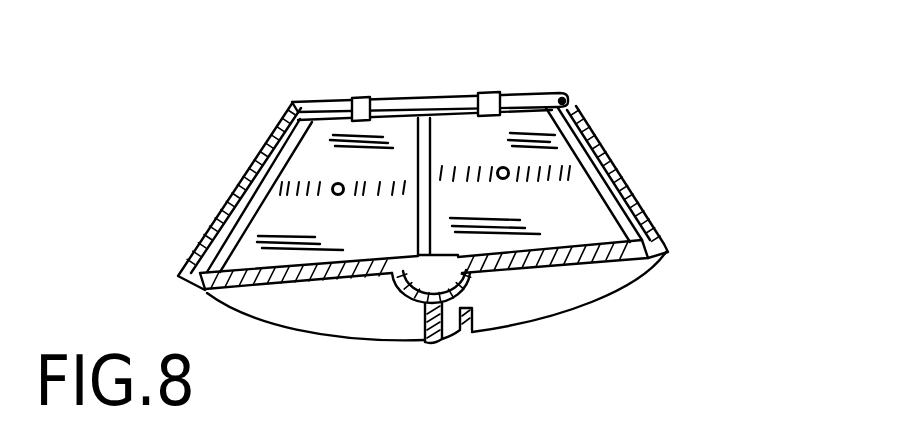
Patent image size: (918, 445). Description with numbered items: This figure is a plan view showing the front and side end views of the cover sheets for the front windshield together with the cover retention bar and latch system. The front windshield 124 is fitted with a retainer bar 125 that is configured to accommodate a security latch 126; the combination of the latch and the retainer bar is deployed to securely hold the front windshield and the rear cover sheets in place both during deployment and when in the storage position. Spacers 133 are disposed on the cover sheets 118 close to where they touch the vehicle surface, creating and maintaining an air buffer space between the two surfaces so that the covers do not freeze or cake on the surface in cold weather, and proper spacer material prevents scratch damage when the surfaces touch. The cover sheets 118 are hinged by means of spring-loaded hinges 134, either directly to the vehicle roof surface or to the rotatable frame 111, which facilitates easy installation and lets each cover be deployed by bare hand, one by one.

The rotatable frame 111 is at (291, 101).
The spring-loaded hinge 134 is at (535, 90).
The cover sheet 118 is at (600, 146).
The spacer 133 is at (509, 175).
The front windshield 124 is at (313, 218).
The retainer bar 125 is at (587, 263).
The security latch 126 is at (470, 338).